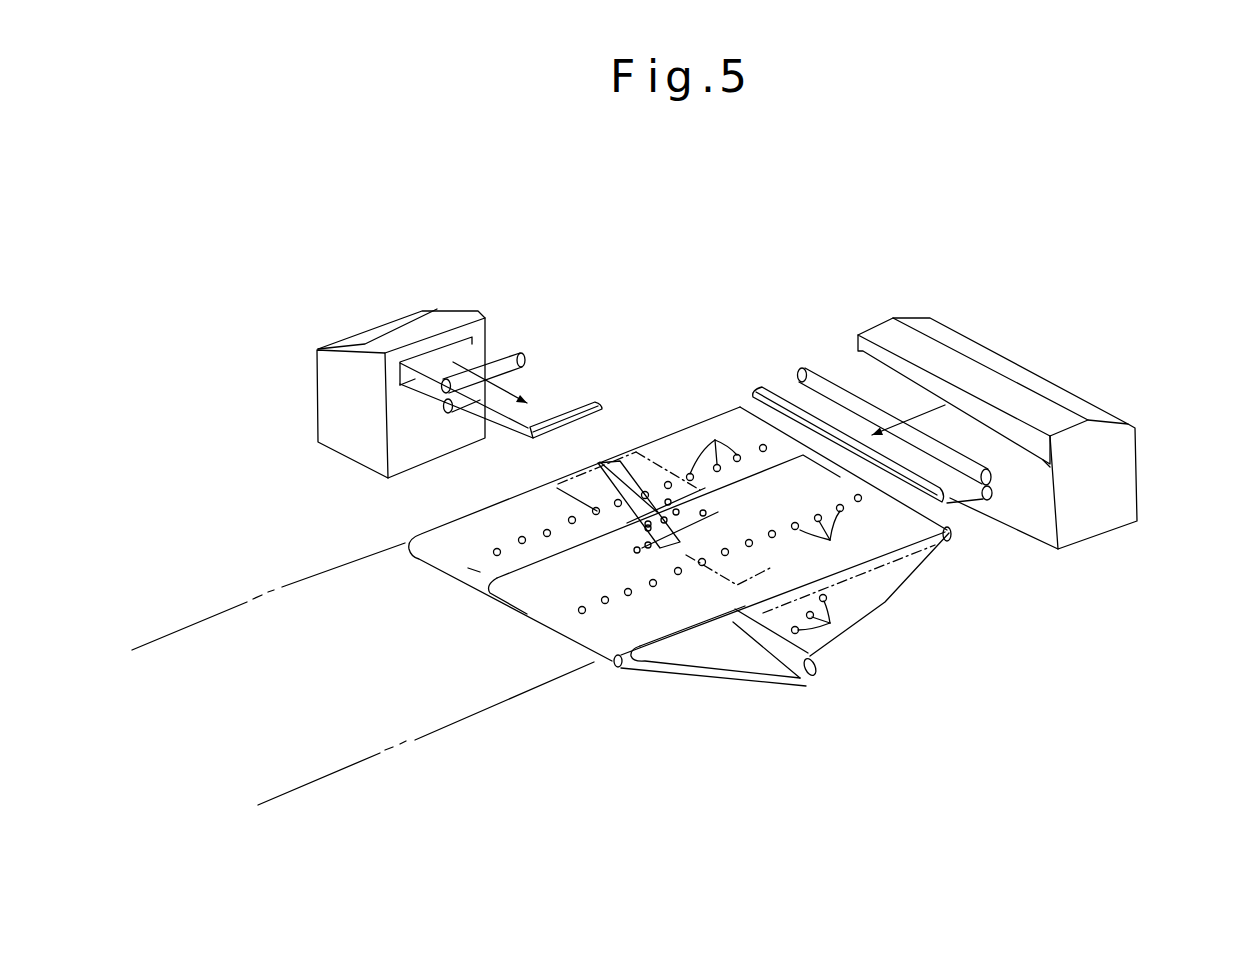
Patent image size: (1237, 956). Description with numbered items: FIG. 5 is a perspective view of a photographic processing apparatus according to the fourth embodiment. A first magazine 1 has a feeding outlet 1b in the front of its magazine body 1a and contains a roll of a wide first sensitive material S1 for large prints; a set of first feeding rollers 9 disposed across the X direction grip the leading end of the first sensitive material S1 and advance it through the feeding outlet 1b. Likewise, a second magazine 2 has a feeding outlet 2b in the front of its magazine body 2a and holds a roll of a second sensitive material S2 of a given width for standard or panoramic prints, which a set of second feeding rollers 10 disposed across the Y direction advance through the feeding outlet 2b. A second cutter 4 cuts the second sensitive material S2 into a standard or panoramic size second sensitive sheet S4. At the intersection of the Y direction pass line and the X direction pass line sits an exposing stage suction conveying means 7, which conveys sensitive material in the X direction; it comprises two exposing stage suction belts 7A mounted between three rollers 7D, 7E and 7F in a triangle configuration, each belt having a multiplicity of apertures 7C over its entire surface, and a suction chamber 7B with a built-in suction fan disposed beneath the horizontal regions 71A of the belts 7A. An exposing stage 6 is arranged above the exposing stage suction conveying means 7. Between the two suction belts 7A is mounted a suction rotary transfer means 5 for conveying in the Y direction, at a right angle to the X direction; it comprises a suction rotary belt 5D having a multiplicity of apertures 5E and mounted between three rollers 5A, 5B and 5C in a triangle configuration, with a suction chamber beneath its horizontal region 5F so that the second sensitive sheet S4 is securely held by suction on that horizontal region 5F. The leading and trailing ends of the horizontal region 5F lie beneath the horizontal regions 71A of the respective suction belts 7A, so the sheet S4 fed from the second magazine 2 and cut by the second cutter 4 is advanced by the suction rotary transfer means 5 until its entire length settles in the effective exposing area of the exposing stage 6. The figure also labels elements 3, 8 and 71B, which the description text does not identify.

The first magazine 1 is at (1181, 322).
The magazine body 1a is at (1033, 403).
The feeding outlet 1b is at (1043, 466).
The second magazine 2 is at (473, 245).
The magazine body 2a is at (448, 314).
The feeding outlet 2b is at (470, 345).
The feed roller 3 is at (940, 495).
The second cutter 4 is at (592, 402).
The suction rotary transfer means 5 is at (628, 558).
The roller 5A is at (637, 553).
The roller 5B is at (645, 545).
The roller 5C is at (686, 555).
The suction rotary belt 5D is at (706, 512).
The apertures 5E is at (600, 462).
The horizontal region 5F is at (650, 525).
The exposing stage 6 is at (472, 527).
The exposing stage suction conveying means 7 is at (728, 684).
The exposing stage suction belts 7A is at (541, 615).
The suction chamber 7B is at (747, 623).
The apertures 7C is at (681, 525).
The roller 7D is at (813, 673).
The roller 7E is at (947, 540).
The roller 7F is at (622, 668).
The horizontal regions 71A is at (417, 556).
The conveyor belt 71B is at (703, 665).
The discharge guide 8 is at (448, 692).
The first feeding rollers 9 is at (987, 495).
The second feeding rollers 10 is at (515, 357).
The first sensitive material S1 is at (848, 372).
The second sensitive material S2 is at (507, 420).
The second sensitive sheet S4 is at (625, 476).
The X direction X is at (908, 410).
The Y direction Y is at (490, 387).